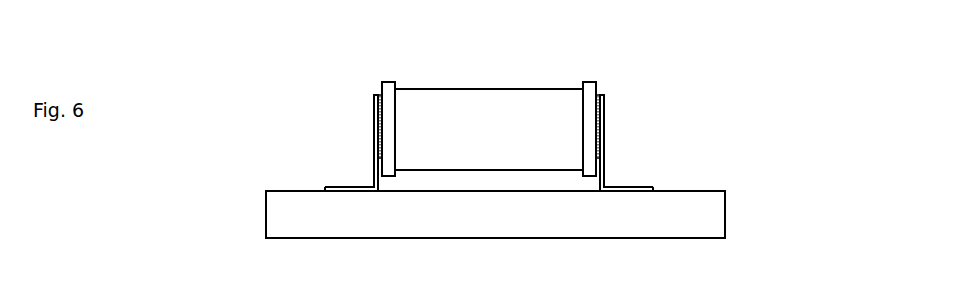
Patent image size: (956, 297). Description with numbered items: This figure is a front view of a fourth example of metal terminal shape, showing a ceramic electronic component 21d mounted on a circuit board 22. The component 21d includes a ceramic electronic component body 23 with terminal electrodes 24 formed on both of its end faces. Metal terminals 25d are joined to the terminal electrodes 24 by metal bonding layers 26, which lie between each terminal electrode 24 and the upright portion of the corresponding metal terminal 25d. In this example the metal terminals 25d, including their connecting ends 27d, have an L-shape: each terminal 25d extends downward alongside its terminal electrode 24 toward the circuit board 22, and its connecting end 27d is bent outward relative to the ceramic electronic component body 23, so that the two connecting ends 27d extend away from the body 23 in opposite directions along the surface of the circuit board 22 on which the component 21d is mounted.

The ceramic electronic component 21d is at (255, 28).
The circuit board 22 is at (712, 222).
The ceramic electronic component body 23 is at (475, 89).
The terminal electrode 24 is at (390, 84).
The metal terminal 25d is at (375, 122).
The metal bonding layer 26 is at (382, 93).
The connecting end 27d is at (343, 187).